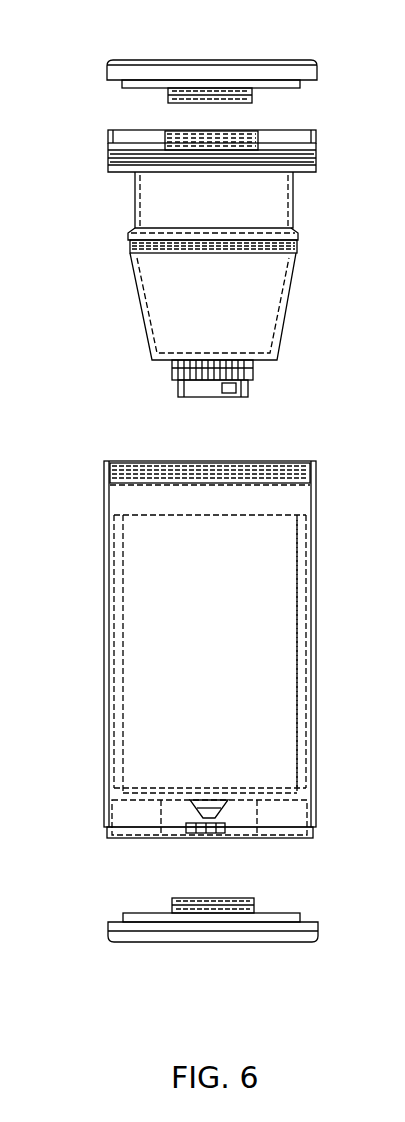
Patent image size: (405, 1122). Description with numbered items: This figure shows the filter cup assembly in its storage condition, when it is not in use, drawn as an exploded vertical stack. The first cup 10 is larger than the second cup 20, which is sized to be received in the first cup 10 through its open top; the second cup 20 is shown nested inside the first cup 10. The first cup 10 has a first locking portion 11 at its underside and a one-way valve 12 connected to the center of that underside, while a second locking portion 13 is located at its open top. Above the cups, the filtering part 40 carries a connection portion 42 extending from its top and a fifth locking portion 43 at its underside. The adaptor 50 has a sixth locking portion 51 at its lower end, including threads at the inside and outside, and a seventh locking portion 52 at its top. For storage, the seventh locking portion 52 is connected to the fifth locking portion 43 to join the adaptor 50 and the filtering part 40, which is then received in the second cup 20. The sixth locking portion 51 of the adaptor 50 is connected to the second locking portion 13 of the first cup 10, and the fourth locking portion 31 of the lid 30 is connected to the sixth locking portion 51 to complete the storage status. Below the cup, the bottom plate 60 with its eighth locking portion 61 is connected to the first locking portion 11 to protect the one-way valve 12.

The first cup 10 is at (112, 547).
The first locking portion 11 is at (305, 812).
The one-way valve 12 is at (205, 800).
The second locking portion 13 is at (115, 463).
The second cup 20 is at (300, 608).
The lid 30 is at (134, 70).
The fourth locking portion 31 is at (250, 96).
The filtering part 40 is at (177, 293).
The connection portion 42 is at (245, 373).
The fifth locking portion 43 is at (130, 248).
The adaptor 50 is at (158, 195).
The sixth locking portion 51 is at (135, 143).
The seventh locking portion 52 is at (298, 232).
The bottom plate 60 is at (110, 920).
The eighth locking portion 61 is at (192, 903).